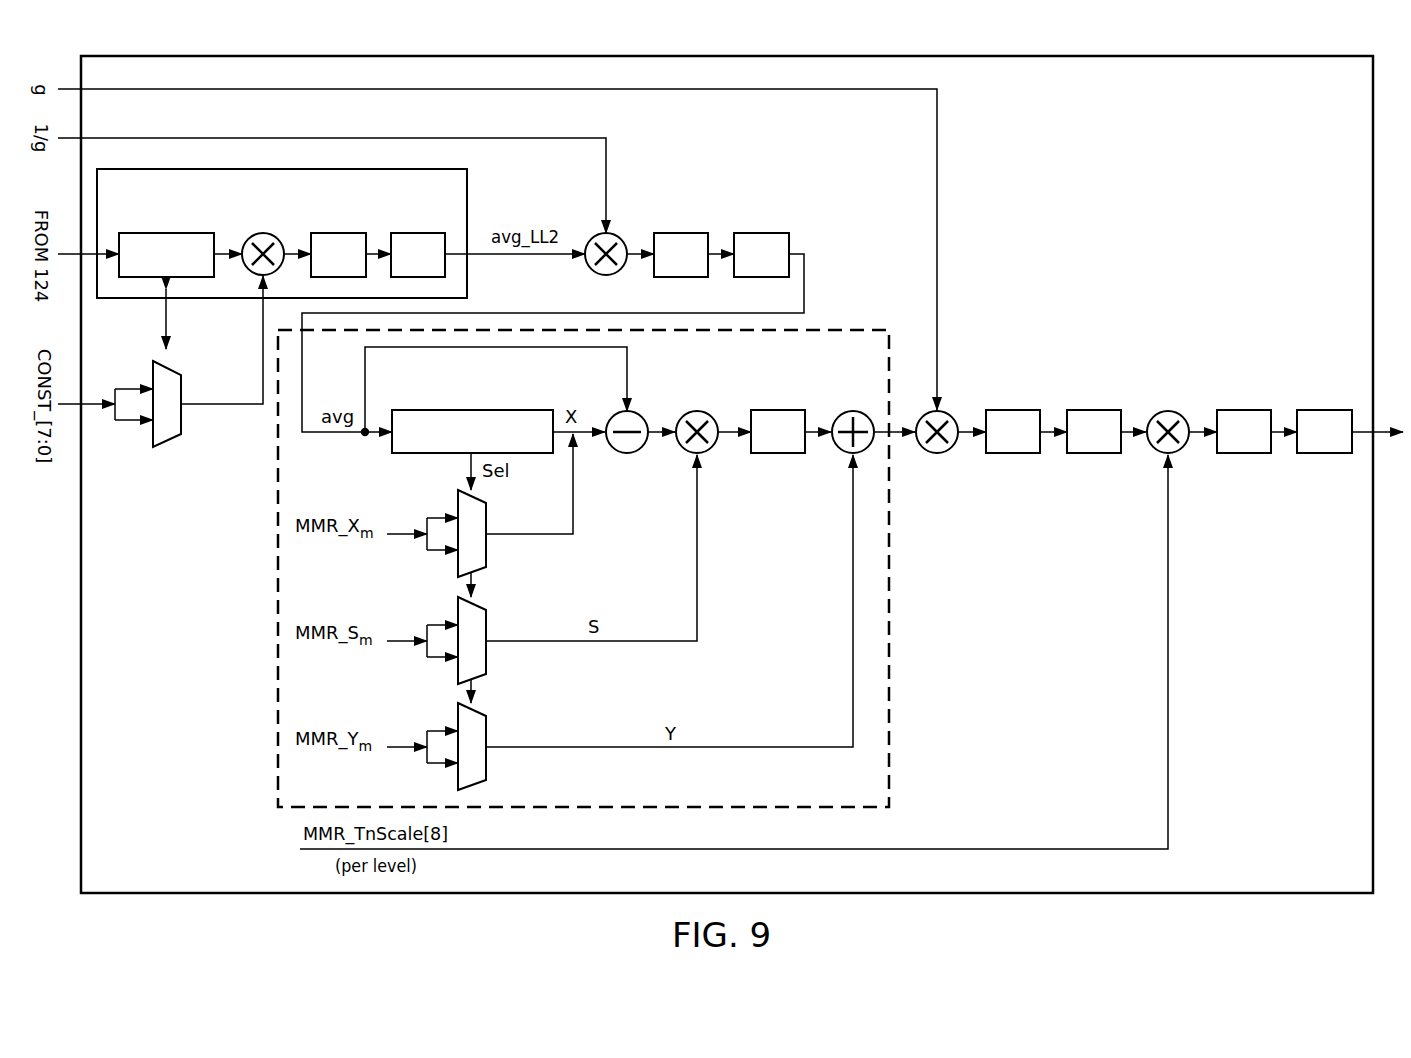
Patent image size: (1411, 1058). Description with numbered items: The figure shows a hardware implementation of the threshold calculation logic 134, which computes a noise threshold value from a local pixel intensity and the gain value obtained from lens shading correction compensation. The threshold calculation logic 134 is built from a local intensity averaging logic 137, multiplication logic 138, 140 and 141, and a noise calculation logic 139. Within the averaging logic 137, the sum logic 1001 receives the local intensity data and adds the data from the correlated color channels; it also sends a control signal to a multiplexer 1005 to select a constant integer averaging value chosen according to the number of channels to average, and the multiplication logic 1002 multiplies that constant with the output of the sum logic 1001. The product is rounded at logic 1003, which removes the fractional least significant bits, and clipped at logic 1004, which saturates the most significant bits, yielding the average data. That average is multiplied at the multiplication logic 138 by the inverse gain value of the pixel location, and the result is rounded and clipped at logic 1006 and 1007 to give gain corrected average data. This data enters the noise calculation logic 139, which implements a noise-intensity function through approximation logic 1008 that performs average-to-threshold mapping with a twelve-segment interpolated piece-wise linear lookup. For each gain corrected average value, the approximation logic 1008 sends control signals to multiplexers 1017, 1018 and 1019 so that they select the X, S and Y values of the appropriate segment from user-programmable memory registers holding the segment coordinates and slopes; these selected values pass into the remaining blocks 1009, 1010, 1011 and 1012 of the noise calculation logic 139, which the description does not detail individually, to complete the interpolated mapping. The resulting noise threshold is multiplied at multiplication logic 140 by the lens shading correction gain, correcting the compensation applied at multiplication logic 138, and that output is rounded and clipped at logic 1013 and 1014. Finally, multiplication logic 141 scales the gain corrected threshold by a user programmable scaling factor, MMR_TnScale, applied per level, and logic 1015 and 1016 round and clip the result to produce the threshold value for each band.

The threshold calculation logic 134 is at (1137, 223).
The LL2 averaging logic 137 is at (233, 302).
The multiplication logic 138 is at (621, 239).
The noise calculation logic 139 is at (277, 672).
The multiplication logic 140 is at (944, 452).
The multiplication logic 141 is at (1183, 417).
The LL2 sum logic 1001 is at (157, 233).
The multiplication logic 1002 is at (258, 233).
The rounding logic 1003 is at (337, 233).
The clipping logic 1004 is at (418, 233).
The multiplexer 1005 is at (163, 447).
The rounding logic 1006 is at (680, 233).
The clipping logic 1007 is at (760, 233).
The approximation logic 1008 is at (460, 410).
The subtractor 1009 is at (640, 418).
The multiplier 1010 is at (685, 450).
The left shifter 1011 is at (775, 410).
The adder 1012 is at (840, 450).
The rounding logic 1013 is at (1012, 410).
The clipping logic 1014 is at (1095, 453).
The rounding logic 1015 is at (1245, 453).
The clipping logic 1016 is at (1325, 410).
The multiplexer 1017 is at (486, 548).
The multiplexer 1018 is at (486, 655).
The multiplexer 1019 is at (486, 764).